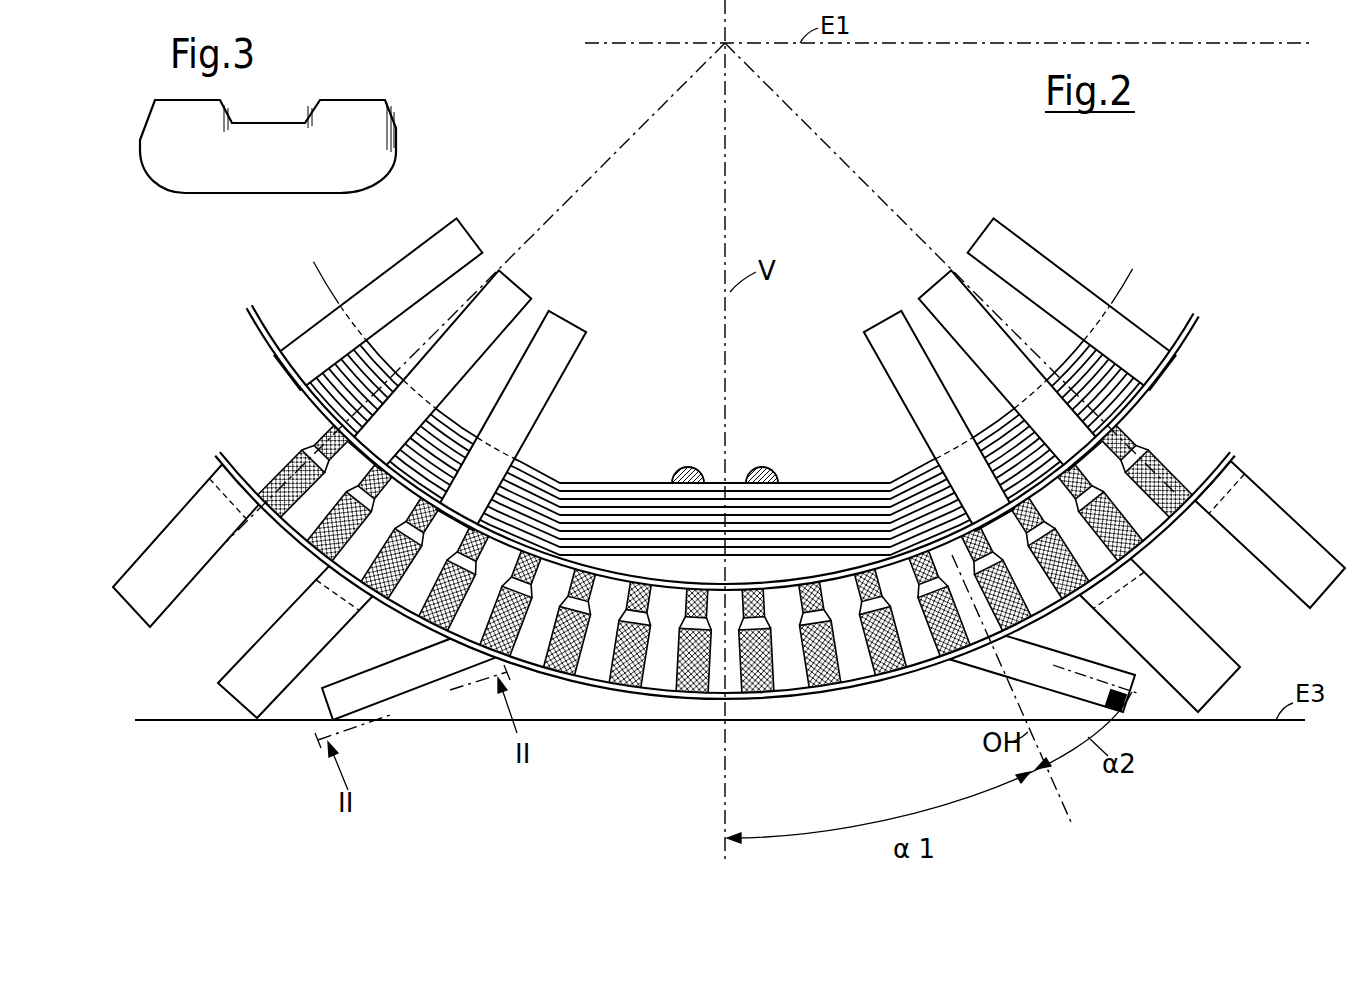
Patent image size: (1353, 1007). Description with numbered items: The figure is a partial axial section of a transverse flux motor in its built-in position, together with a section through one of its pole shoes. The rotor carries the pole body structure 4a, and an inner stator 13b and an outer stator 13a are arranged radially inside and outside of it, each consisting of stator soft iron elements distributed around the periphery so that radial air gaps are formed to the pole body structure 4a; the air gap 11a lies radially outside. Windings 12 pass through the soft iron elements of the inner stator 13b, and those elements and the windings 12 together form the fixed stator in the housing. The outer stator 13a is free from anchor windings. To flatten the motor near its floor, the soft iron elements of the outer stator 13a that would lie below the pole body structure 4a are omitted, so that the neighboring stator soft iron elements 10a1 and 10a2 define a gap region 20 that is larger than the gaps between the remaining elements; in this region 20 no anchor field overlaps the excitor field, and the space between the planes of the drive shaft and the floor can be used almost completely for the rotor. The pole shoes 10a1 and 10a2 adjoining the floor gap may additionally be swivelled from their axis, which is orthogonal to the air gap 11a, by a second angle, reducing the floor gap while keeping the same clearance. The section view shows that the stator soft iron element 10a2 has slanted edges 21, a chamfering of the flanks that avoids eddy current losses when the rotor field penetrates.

In FIG. 2, the pole body structure 4a is at (1199, 395).
In FIG. 2, the stator soft iron element 10a1 is at (1126, 714).
In FIG. 3, the stator soft iron element 10a2 is at (372, 152).
In FIG. 2, the stator soft iron element 10a2 is at (390, 697).
In FIG. 2, the air gap 11a is at (1230, 444).
In FIG. 2, the windings 12 is at (822, 497).
In FIG. 2, the outer stator 13a is at (181, 470).
In FIG. 2, the inner stator 13b is at (312, 297).
In FIG. 2, the gap region 20 is at (652, 764).
In FIG. 3, the slanted edges 21 is at (224, 114).